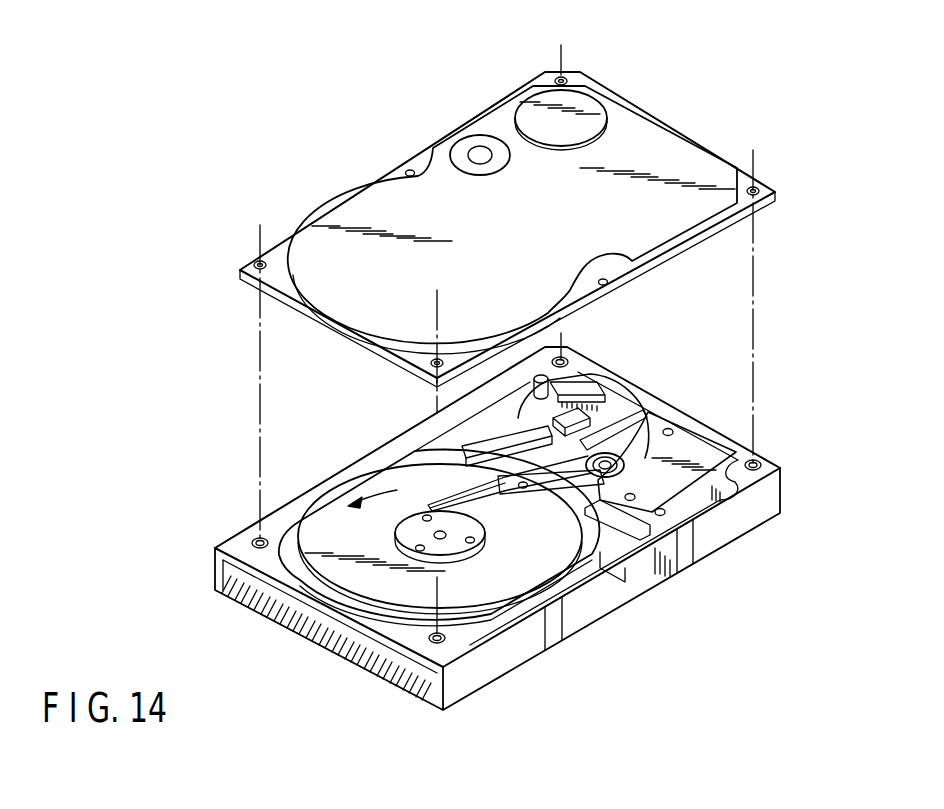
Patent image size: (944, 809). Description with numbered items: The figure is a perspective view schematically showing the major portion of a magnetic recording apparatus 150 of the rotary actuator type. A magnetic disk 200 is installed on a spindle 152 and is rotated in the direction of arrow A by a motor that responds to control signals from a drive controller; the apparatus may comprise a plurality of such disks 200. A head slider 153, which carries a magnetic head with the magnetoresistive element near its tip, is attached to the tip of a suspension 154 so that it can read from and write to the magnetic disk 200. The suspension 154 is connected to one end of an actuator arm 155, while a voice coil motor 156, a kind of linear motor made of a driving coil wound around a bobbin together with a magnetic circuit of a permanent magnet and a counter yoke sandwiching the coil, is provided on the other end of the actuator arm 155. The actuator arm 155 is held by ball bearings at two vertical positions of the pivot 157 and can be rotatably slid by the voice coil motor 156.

The magnetic recording apparatus 150 is at (364, 158).
The spindle 152 is at (450, 550).
The head slider 153 is at (427, 507).
The suspension 154 is at (512, 487).
The actuator arm 155 is at (603, 478).
The voice coil motor 156 is at (696, 486).
The pivot 157 is at (612, 458).
The magnetic disk 200 is at (330, 522).